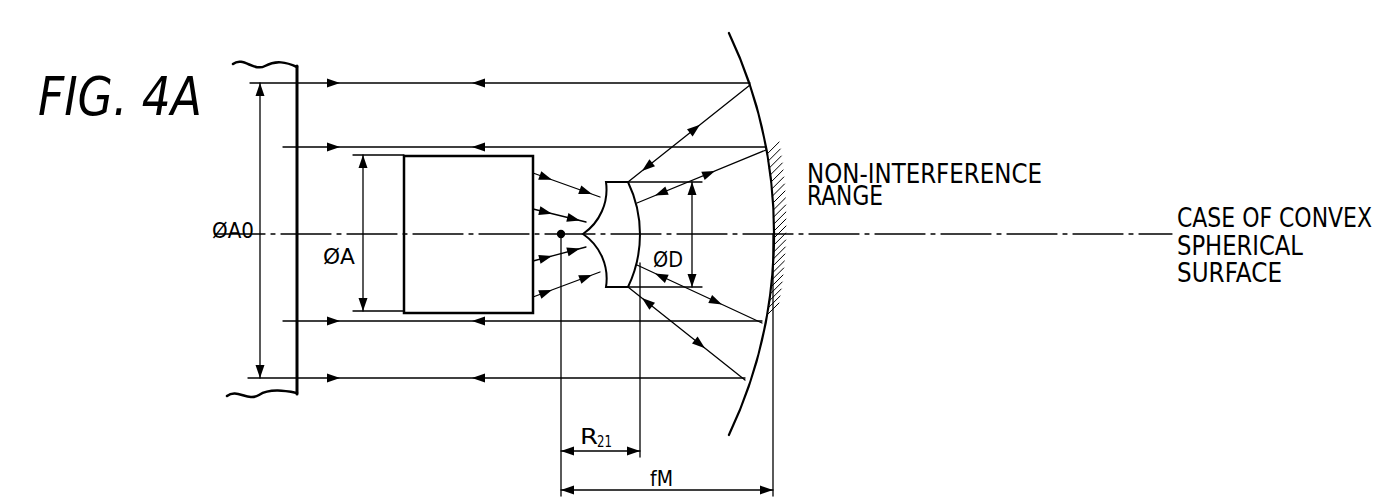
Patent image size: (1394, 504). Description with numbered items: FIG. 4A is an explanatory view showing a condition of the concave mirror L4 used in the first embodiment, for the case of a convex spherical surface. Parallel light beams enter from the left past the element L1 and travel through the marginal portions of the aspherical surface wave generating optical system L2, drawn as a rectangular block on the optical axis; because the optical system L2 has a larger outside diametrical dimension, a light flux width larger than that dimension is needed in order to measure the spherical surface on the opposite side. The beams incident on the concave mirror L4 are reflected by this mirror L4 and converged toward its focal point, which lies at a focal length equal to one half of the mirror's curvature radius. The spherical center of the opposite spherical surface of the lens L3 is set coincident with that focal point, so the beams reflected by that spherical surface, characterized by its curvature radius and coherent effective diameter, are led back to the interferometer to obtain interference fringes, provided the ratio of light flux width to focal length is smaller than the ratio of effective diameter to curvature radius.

The light source / emitting plate L1 is at (251, 229).
The aspherical surface wave generating optical system L2 is at (468, 234).
The lens L3 is at (611, 234).
The concave mirror L4 is at (757, 234).